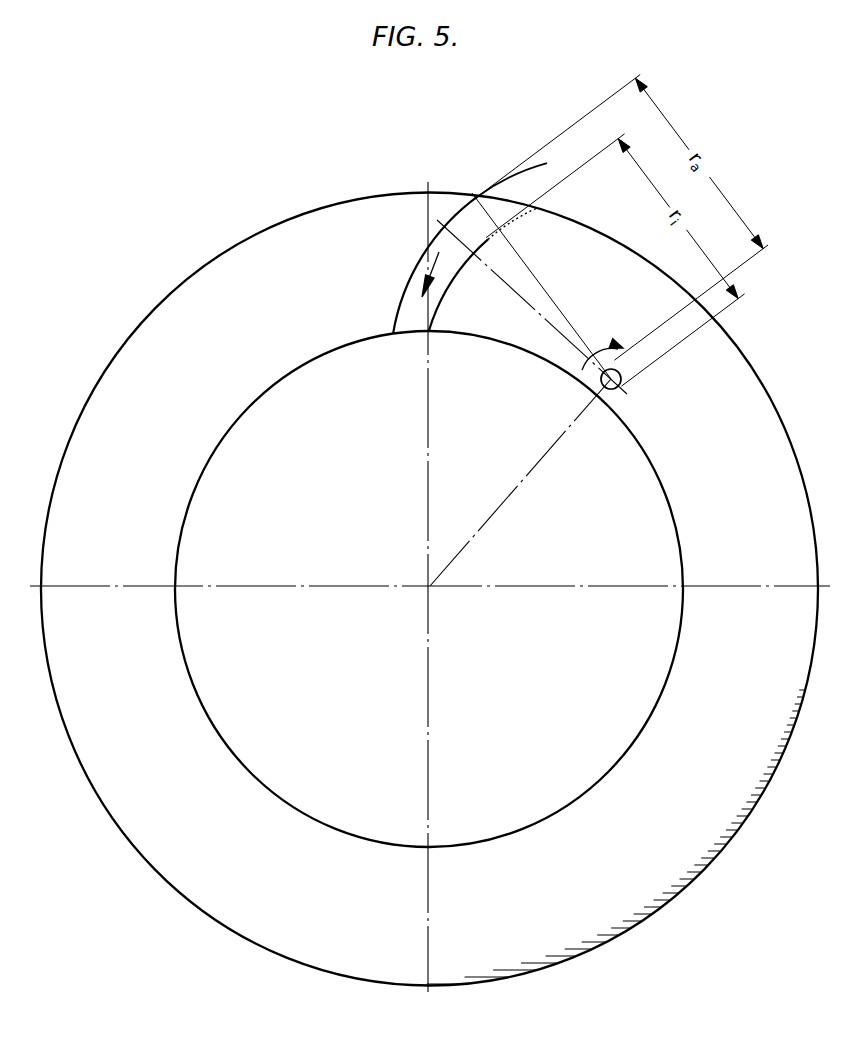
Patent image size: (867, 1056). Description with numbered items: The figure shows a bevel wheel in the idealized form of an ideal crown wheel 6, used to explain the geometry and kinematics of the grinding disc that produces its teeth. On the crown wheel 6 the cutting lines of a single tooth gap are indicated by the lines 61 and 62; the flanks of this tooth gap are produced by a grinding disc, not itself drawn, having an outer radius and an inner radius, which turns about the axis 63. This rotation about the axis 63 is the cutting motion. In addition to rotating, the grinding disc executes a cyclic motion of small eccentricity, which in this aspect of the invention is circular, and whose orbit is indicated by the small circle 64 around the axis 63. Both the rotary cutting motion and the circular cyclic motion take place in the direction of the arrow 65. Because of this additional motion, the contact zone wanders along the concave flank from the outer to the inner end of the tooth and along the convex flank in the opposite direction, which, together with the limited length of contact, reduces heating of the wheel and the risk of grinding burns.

The ideal crown wheel 6 is at (717, 803).
The cutting line of tooth gap 61 is at (445, 248).
The cutting line of tooth gap 62 is at (482, 233).
The axis 63 is at (602, 388).
The orbit of cyclic motion 64 is at (622, 371).
The arrow 65 is at (615, 343).